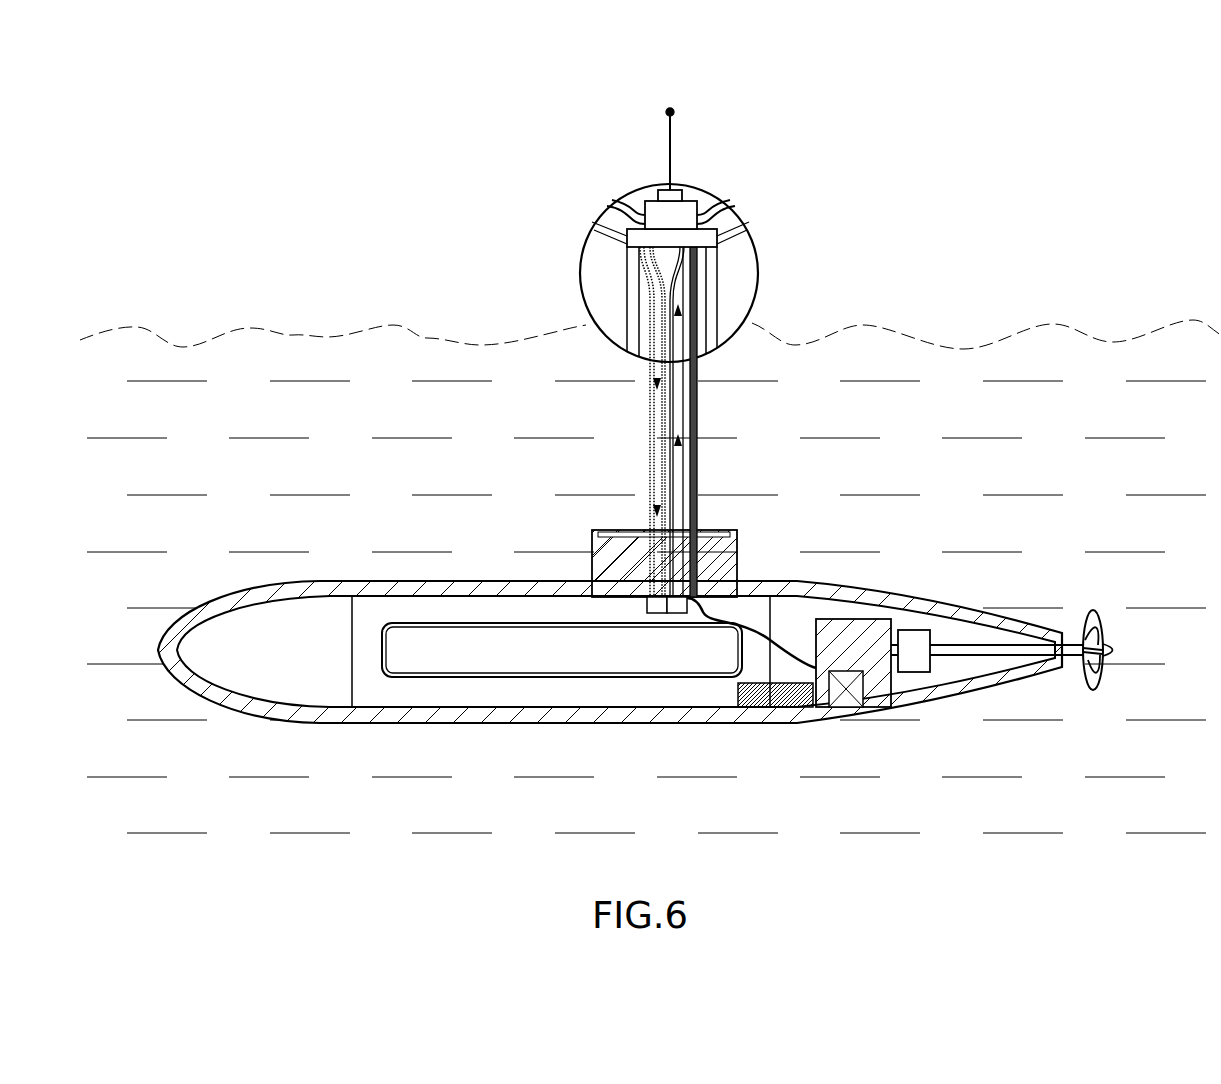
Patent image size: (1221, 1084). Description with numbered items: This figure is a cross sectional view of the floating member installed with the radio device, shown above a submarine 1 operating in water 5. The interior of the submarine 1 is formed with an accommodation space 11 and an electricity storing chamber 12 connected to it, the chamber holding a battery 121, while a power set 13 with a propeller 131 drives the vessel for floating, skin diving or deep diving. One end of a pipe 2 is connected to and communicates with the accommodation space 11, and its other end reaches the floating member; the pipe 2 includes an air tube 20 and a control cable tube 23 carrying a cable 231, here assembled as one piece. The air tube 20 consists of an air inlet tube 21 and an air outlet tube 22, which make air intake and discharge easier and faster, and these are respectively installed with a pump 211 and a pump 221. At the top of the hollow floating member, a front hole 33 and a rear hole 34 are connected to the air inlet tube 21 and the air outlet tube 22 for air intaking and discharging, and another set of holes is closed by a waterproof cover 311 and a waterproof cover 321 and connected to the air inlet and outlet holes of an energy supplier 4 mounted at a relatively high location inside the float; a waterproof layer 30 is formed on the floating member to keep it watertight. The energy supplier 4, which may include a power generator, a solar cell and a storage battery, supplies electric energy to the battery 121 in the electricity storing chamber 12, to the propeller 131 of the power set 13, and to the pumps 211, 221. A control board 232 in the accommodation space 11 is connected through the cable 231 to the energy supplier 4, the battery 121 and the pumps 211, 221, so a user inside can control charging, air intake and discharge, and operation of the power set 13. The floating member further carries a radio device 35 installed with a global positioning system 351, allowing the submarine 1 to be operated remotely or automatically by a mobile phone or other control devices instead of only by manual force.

The submarine 1 is at (610, 648).
The accommodation space 11 is at (332, 680).
The electricity storing chamber 12 is at (885, 666).
The battery 121 is at (852, 705).
The power set 13 is at (1045, 618).
The propeller 131 is at (1097, 628).
The pipe 2 is at (641, 368).
The air tube 20 is at (579, 422).
The air inlet tube 21 is at (650, 484).
The pump 211 is at (650, 605).
The air outlet tube 22 is at (650, 420).
The pump 221 is at (737, 580).
The control cable tube 23 is at (749, 457).
The cable 231 is at (700, 440).
The control board 232 is at (780, 707).
The waterproof layer 30 is at (740, 358).
The waterproof cover 311 is at (612, 200).
The waterproof cover 321 is at (727, 196).
The hole 33 is at (585, 232).
The hole 34 is at (752, 215).
The radio device 35 is at (680, 135).
The global positioning system 351 is at (678, 188).
The energy supplier 4 is at (669, 213).
The water 5 is at (300, 380).